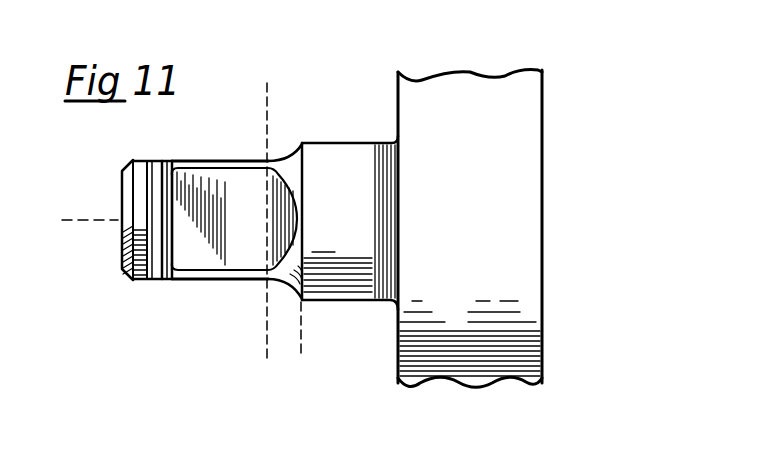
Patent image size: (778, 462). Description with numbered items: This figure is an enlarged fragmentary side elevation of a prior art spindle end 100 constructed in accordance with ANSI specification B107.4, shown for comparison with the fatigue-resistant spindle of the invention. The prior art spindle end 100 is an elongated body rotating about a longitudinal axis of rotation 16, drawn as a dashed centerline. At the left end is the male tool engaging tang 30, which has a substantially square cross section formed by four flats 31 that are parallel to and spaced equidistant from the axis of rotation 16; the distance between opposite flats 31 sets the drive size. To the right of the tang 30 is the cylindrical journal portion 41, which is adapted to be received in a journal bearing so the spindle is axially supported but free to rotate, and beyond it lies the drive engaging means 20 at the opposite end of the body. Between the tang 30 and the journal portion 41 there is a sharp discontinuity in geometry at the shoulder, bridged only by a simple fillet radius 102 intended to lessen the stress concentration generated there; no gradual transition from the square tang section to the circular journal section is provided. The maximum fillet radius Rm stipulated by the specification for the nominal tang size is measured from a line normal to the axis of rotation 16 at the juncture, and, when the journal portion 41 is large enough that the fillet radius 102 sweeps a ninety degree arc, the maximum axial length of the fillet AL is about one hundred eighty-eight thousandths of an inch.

The drive engaging means 20 is at (400, 63).
The male tool engaging tang 30 is at (141, 158).
The flats 31 is at (216, 159).
The cylindrical journal portion 41 is at (329, 143).
The fillet radius 102 is at (304, 173).
The longitudinal axis of rotation 16 is at (86, 214).
The prior art spindle end 100 is at (113, 249).
The maximum fillet radius Rm is at (294, 153).
The maximum axial length of the fillet radius AL is at (332, 352).